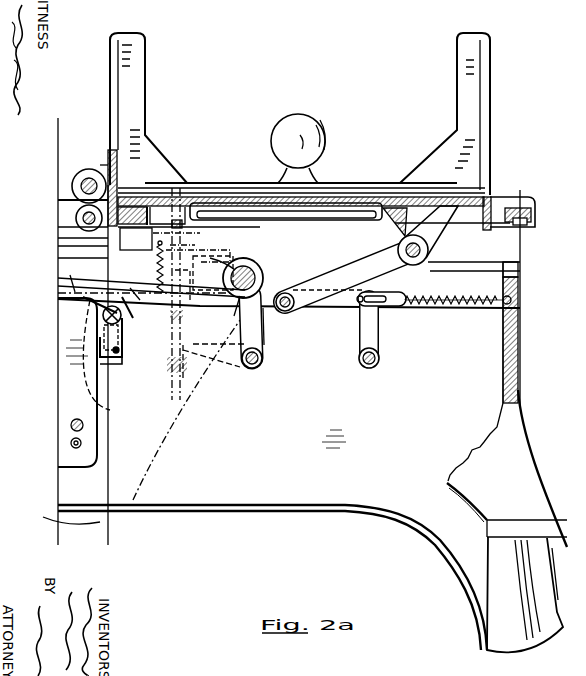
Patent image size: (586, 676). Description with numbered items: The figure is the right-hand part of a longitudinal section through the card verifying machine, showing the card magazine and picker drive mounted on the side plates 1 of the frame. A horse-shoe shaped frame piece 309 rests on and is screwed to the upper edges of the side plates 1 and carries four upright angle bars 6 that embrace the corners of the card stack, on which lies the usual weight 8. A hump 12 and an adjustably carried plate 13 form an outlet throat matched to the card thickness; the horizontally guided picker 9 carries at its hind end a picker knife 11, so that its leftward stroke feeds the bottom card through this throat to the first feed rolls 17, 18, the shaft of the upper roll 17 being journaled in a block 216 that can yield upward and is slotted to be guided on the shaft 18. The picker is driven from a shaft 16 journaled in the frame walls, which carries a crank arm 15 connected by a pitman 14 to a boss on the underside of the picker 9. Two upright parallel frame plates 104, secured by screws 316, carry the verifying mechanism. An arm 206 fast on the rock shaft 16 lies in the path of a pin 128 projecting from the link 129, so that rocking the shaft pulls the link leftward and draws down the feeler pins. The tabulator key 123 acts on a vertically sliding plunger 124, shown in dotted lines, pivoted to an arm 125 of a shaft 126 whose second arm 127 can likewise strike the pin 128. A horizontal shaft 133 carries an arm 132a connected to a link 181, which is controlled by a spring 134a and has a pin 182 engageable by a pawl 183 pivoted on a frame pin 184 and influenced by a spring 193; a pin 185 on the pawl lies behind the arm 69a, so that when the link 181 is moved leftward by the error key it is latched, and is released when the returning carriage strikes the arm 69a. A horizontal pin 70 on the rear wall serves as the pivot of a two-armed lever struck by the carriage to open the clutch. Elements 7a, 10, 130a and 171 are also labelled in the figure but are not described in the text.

The side plates 1 is at (305, 472).
The upright angle bars 6 is at (137, 57).
The plate 7a is at (213, 202).
The weight 8 is at (310, 125).
The picker 9 is at (410, 218).
The slide block 10 is at (189, 220).
The picker knife 11 is at (490, 205).
The hump 12 is at (152, 205).
The plate 13 is at (128, 200).
The pitman 14 is at (355, 270).
The crank arm 15 is at (272, 290).
The shaft 16 is at (256, 268).
The feed roll 17 is at (116, 148).
The feed roll 18 is at (76, 182).
The arm 69a is at (158, 264).
The horizontal pin 70 is at (124, 338).
The frame plates 104 is at (110, 414).
The tabulator key 123 is at (172, 280).
The plunger 124 is at (214, 347).
The arm 125 is at (215, 358).
The shaft 126 is at (258, 370).
The second arm 127 is at (264, 346).
The pin 128 is at (246, 298).
The link 129 is at (151, 278).
The spring anchor link 130a is at (390, 312).
The arm 132a is at (381, 352).
The horizontal shaft 133 is at (375, 368).
The spring 134a is at (422, 294).
The latch 171 is at (112, 361).
The link 181 is at (94, 290).
The pin 182 is at (204, 278).
The pawl 183 is at (190, 236).
The pin 184 is at (124, 318).
The pin 185 is at (136, 239).
The spring 193 is at (236, 253).
The arm 206 is at (268, 323).
The block 216 is at (94, 180).
The horse-shoe shaped frame piece 309 is at (546, 195).
The screws 316 is at (80, 443).